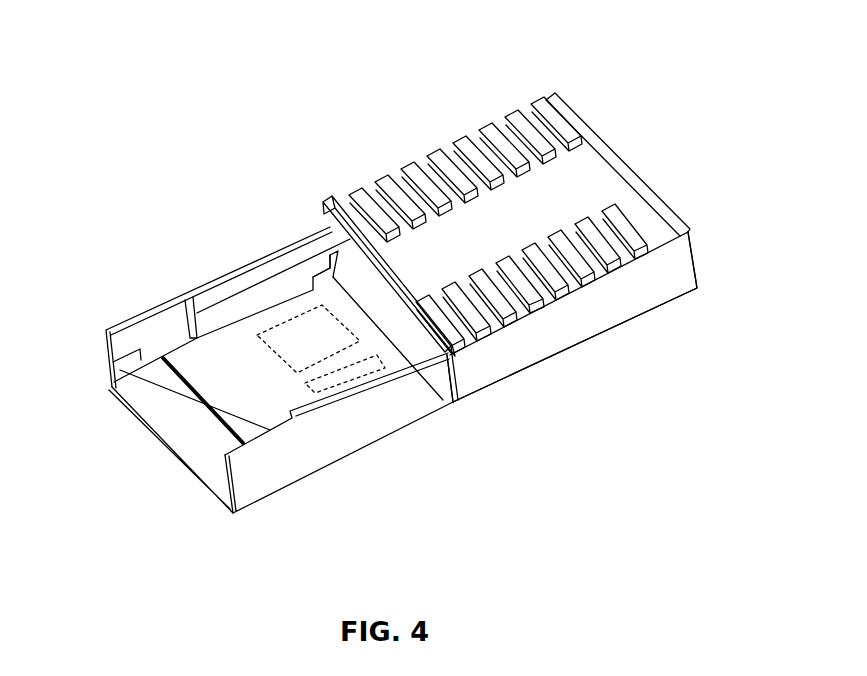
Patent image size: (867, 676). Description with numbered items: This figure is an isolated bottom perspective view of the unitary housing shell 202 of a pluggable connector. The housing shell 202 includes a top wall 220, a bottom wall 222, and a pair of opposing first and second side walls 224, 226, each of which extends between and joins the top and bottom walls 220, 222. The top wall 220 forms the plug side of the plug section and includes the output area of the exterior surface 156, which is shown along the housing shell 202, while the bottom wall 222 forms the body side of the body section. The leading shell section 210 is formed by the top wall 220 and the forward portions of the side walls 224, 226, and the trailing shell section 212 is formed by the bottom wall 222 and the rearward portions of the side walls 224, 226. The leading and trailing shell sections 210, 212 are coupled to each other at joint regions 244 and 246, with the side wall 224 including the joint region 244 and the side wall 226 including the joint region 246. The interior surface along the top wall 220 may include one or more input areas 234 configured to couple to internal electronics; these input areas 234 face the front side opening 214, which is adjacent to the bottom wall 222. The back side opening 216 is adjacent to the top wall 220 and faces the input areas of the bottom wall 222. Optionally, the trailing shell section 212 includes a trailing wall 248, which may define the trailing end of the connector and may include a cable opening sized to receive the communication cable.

The housing shell 202 is at (537, 257).
The leading shell section 210 is at (273, 348).
The trailing shell section 212 is at (571, 380).
The front side opening 214 is at (183, 322).
The back side opening 216 is at (608, 343).
The top wall 220 is at (247, 360).
The bottom wall 222 is at (495, 213).
The side wall 224 is at (369, 188).
The side wall 226 is at (428, 405).
The input area 234 is at (344, 372).
The joint region 244 is at (330, 255).
The joint region 246 is at (441, 372).
The trailing wall 248 is at (695, 256).
The exterior surface 156 is at (553, 196).